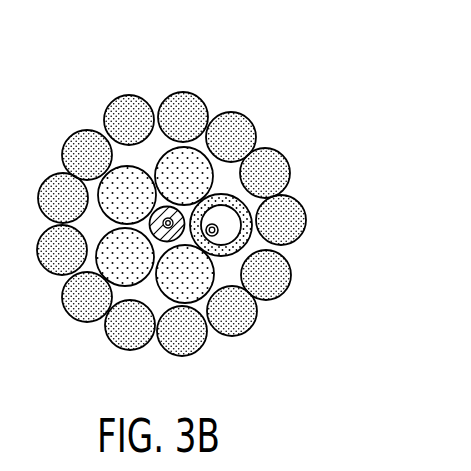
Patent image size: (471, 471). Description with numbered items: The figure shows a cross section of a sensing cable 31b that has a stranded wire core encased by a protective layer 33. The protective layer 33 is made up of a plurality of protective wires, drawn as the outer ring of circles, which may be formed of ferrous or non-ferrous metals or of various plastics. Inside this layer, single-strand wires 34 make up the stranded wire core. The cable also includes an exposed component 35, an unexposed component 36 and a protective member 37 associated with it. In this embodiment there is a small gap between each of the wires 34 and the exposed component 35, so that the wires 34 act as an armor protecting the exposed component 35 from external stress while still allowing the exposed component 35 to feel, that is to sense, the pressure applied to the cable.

The sensing cable 31b is at (266, 70).
The protective layer 33 is at (138, 122).
The single-strand wires 34 is at (103, 175).
The exposed component 35 is at (160, 240).
The unexposed component 36 is at (247, 190).
The protective member 37 is at (218, 227).